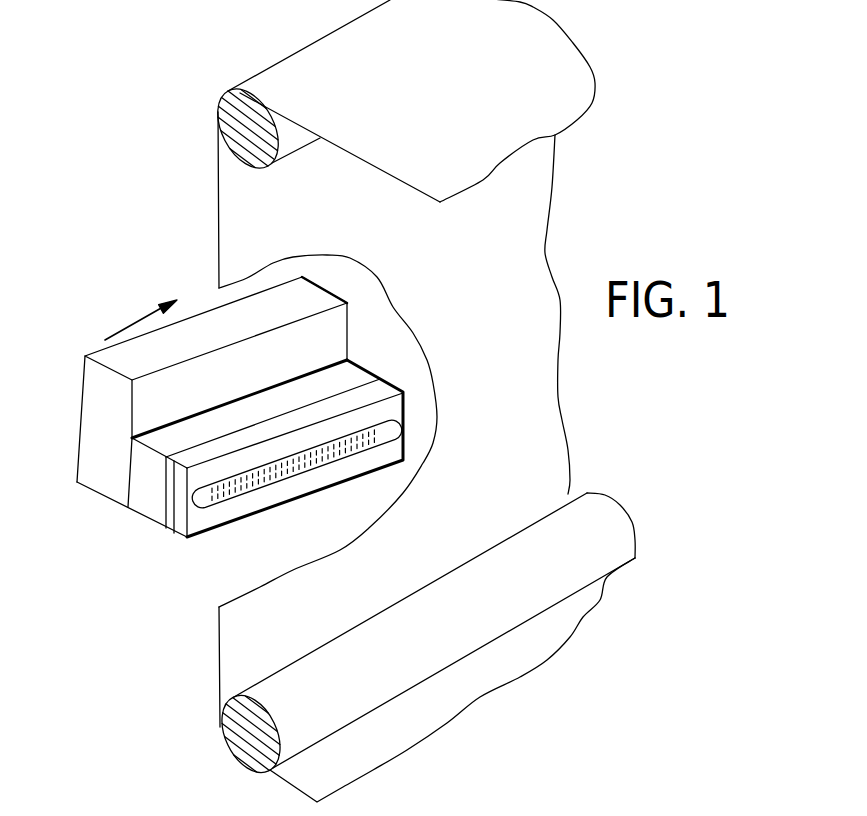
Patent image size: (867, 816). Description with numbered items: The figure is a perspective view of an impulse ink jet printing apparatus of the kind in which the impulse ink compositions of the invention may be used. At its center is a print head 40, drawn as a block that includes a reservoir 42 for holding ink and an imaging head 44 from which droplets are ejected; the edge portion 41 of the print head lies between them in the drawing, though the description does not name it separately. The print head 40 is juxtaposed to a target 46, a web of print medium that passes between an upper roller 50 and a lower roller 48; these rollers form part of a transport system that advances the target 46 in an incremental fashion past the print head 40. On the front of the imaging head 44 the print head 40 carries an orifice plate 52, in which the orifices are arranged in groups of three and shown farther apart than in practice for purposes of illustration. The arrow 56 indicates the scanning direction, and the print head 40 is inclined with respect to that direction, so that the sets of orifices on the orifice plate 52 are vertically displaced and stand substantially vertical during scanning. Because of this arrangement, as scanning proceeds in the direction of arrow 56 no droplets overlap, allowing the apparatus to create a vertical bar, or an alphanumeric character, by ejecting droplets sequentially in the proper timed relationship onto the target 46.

The print head 40 is at (115, 462).
The print head side wall 41 is at (157, 497).
The reservoir 42 is at (98, 383).
The imaging head 44 is at (283, 480).
The target 46 is at (522, 392).
The roller 48 is at (250, 721).
The roller 50 is at (237, 110).
The orifice plate 52 is at (393, 431).
The arrow (scanning direction) 56 is at (138, 320).